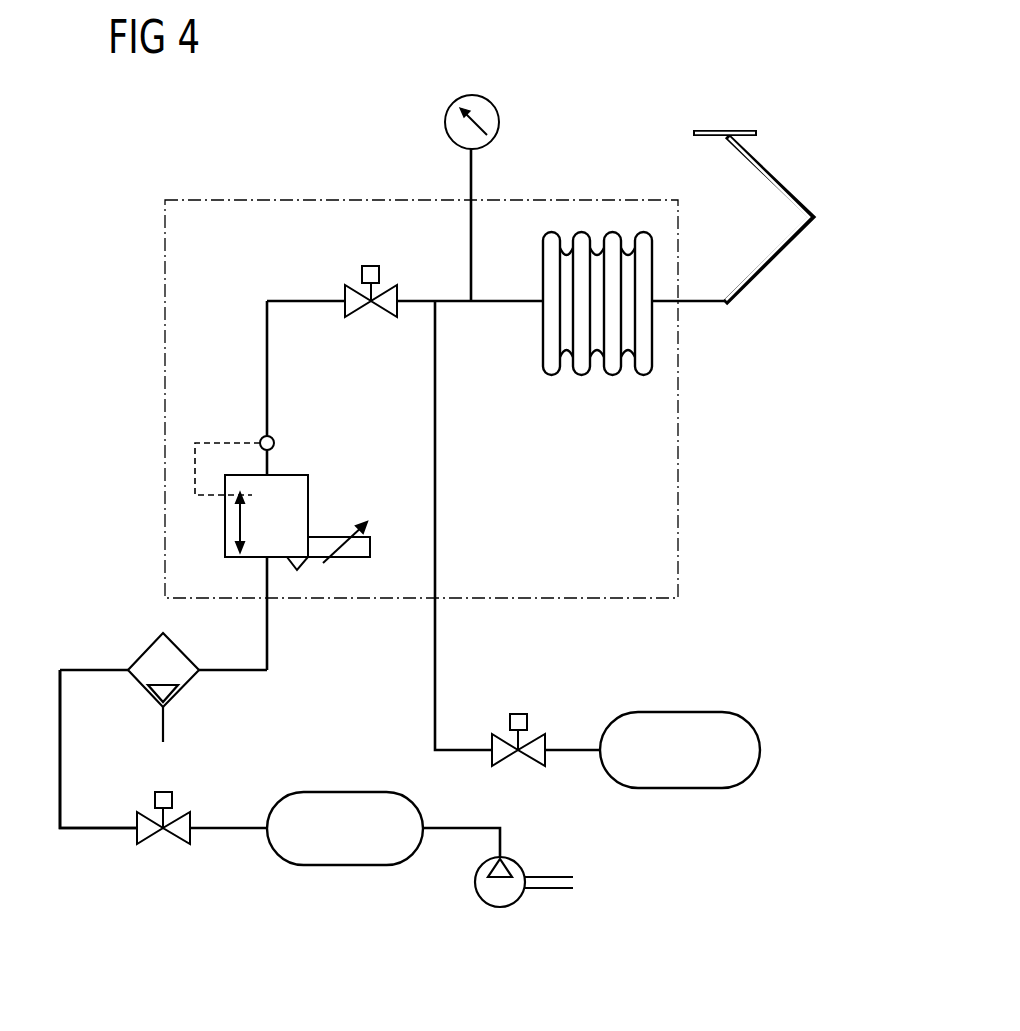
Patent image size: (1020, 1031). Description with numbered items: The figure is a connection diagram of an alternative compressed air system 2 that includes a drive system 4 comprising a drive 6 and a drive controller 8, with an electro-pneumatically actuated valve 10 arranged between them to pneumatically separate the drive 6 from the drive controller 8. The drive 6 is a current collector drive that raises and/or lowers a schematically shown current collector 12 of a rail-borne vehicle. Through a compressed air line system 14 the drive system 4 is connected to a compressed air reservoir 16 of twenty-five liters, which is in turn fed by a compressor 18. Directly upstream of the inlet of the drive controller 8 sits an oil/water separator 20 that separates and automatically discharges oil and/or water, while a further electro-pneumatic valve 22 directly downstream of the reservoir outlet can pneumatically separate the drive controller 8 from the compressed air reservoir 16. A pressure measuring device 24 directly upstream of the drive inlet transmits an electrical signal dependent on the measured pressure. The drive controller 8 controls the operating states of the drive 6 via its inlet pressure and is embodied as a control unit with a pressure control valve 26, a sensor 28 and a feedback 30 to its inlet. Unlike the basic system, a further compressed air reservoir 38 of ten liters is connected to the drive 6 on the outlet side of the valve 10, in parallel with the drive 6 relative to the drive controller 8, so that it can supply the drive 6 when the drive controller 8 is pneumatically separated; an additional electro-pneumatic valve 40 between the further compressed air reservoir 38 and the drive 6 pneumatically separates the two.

The compressed air system 2 is at (264, 870).
The drive system 4 is at (696, 491).
The drive 6 is at (583, 368).
The drive controller 8 is at (218, 532).
The valve 10 is at (381, 312).
The current collector 12 is at (782, 178).
The compressed air line system 14 is at (96, 842).
The compressed air reservoir 16 is at (357, 792).
The compressor 18 is at (500, 907).
The oil/water separator 20 is at (145, 650).
The further valve 22 is at (178, 845).
The pressure measuring device 24 is at (499, 127).
The pressure control valve 26 is at (308, 510).
The sensor 28 is at (274, 443).
The feedback 30 is at (212, 443).
The further compressed air reservoir 38 is at (688, 712).
The further valve 40 is at (532, 768).